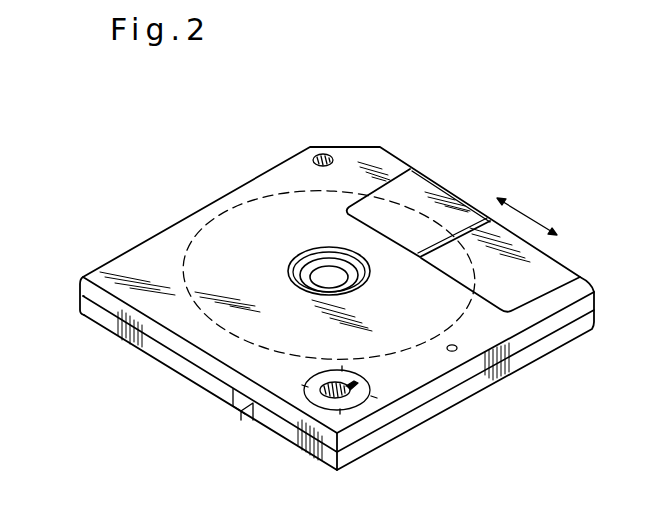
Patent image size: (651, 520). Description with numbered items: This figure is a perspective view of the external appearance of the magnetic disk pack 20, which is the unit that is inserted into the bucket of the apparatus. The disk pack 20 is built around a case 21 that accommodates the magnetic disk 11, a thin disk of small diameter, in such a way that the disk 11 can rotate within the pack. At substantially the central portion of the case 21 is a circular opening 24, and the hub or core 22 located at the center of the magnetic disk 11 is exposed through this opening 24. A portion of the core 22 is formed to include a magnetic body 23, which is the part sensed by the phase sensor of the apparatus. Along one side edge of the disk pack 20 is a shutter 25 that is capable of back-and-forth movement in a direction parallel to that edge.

The magnetic disk pack 20 is at (296, 146).
The magnetic disk 11 is at (204, 226).
The case 21 is at (80, 291).
The hub or core 22 is at (357, 281).
The magnetic body 23 is at (300, 273).
The circular opening 24 is at (317, 247).
The shutter 25 is at (458, 200).